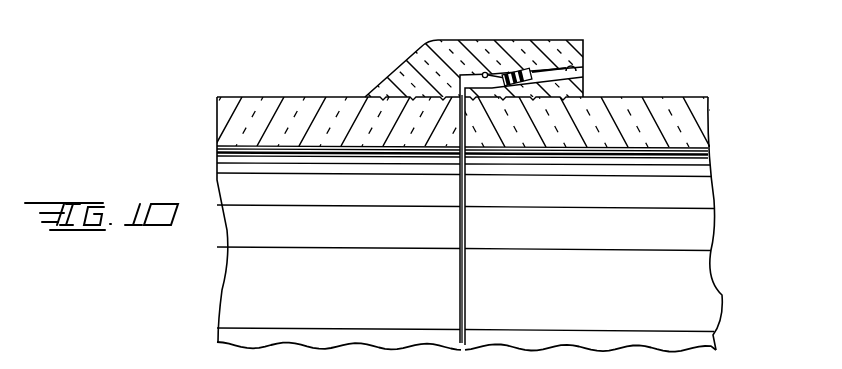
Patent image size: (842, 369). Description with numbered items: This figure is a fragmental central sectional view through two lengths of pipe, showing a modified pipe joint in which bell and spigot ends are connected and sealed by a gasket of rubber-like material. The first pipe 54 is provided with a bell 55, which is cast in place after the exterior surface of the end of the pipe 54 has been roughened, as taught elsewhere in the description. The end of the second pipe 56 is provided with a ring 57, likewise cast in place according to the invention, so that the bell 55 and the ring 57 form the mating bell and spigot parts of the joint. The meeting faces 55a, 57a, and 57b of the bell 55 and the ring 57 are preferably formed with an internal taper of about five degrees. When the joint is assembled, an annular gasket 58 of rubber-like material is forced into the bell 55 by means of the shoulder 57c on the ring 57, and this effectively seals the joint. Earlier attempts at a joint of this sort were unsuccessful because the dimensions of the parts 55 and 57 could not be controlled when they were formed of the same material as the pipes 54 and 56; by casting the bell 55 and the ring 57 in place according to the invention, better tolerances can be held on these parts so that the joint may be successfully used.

The pipe 54 is at (267, 97).
The bell 55 is at (453, 40).
The meeting face 55a is at (486, 72).
The pipe 56 is at (674, 97).
The ring 57 is at (574, 80).
The meeting face 57a is at (489, 88).
The meeting face 57b is at (577, 70).
The shoulder 57c is at (542, 71).
The annular gasket 58 is at (519, 70).